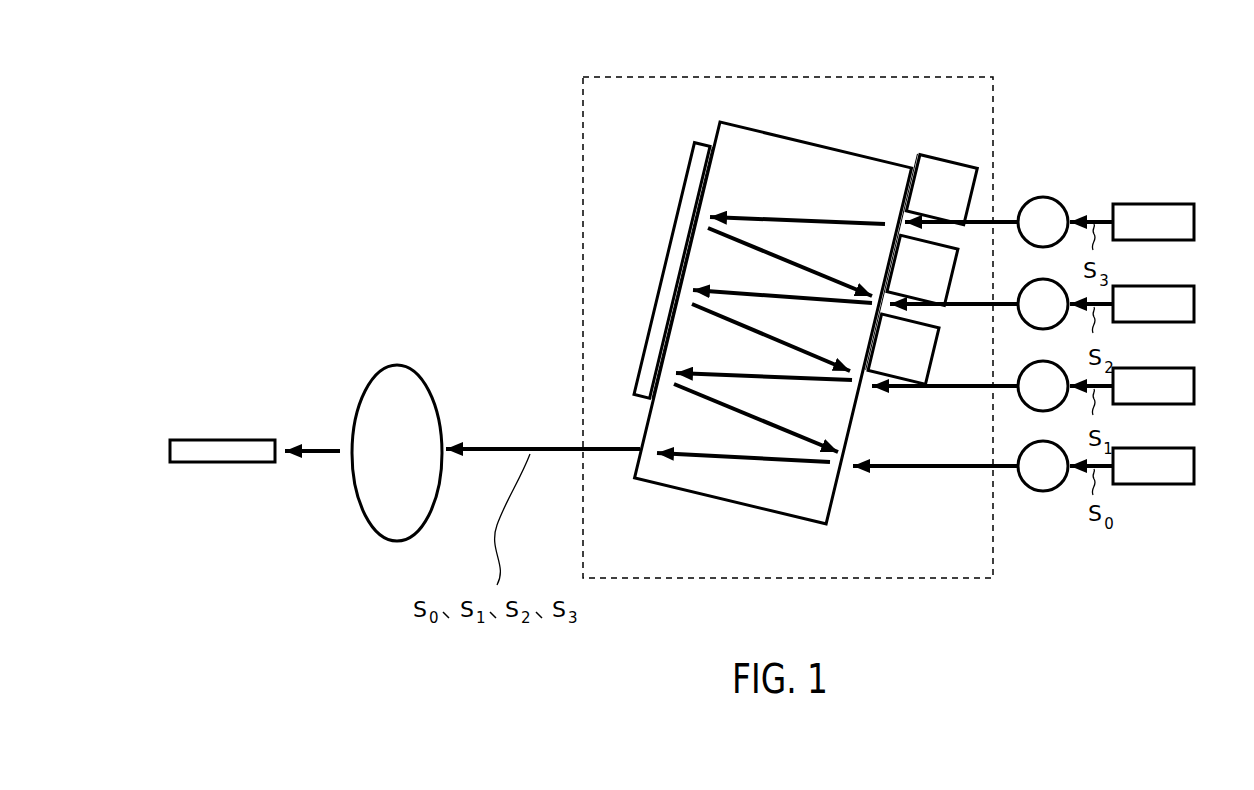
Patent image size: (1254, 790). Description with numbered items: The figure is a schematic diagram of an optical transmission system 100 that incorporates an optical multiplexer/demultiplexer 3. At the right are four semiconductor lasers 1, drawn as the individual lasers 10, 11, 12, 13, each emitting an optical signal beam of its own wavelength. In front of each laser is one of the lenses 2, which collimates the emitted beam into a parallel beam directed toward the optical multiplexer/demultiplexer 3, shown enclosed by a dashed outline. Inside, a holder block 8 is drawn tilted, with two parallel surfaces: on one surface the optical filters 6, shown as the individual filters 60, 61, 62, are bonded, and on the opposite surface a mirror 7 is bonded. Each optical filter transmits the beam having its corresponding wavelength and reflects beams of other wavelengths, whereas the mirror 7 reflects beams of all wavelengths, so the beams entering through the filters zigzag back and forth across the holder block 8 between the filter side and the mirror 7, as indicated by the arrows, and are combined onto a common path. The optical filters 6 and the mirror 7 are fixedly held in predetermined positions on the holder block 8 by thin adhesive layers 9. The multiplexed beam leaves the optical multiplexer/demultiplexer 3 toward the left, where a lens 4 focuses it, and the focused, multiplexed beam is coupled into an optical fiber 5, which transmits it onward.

The optical transmission system 100 is at (1048, 118).
The semiconductor lasers 1 is at (1174, 321).
The semiconductor laser (i=0) 10 is at (1165, 448).
The semiconductor laser (i=1) 11 is at (1165, 368).
The semiconductor laser (i=2) 12 is at (1165, 286).
The semiconductor laser (i=3) 13 is at (1165, 204).
The lenses 2 is at (1056, 197).
The optical multiplexer/demultiplexer 3 is at (896, 578).
The lens 4 is at (422, 384).
The optical fiber 5 is at (221, 440).
The optical filters 6 is at (928, 350).
The optical filter (j=0) 60 is at (899, 488).
The optical filter (j=1) 61 is at (918, 405).
The optical filter (j=2) 62 is at (938, 322).
The mirror 7 is at (675, 228).
The holder block 8 is at (829, 147).
The adhesive layers 9 is at (712, 143).